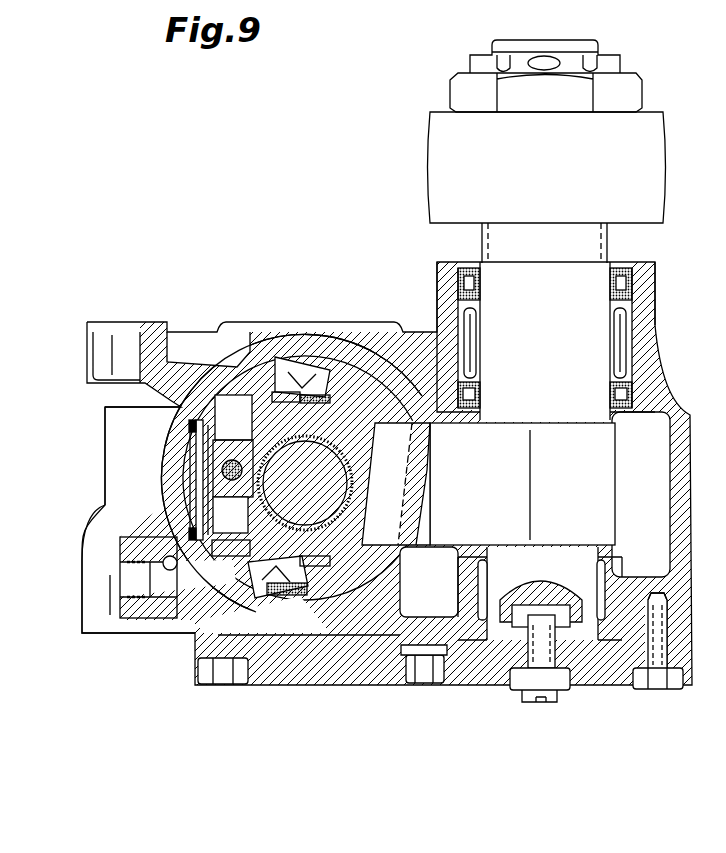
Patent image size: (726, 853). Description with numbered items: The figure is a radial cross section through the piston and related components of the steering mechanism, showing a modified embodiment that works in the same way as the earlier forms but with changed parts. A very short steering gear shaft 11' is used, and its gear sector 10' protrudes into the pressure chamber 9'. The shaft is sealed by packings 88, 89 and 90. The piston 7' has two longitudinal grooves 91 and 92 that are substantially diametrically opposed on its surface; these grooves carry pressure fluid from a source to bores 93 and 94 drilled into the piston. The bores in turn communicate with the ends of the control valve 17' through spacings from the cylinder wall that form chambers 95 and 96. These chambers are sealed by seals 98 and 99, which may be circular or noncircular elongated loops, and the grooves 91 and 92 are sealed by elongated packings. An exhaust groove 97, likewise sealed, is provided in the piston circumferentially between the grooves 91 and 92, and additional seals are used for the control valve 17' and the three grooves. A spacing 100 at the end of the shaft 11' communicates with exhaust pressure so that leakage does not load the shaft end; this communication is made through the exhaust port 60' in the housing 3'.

The housing 3' is at (117, 560).
The piston 7' is at (291, 573).
The pressure chamber 9' is at (401, 617).
The gear sector 10' is at (505, 617).
The steering gear shaft 11' is at (493, 679).
The control valve 17' is at (110, 455).
The exhaust port 60' is at (108, 575).
The packing 88 is at (600, 617).
The packing 89 is at (427, 337).
The packing 90 is at (437, 260).
The longitudinal groove 91 is at (322, 565).
The longitudinal groove 92 is at (320, 345).
The bore 93 is at (285, 590).
The bore 94 is at (280, 360).
The chamber 95 is at (226, 564).
The chamber 96 is at (253, 373).
The exhaust groove 97 is at (190, 465).
The seal 98 is at (257, 585).
The seal 99 is at (290, 355).
The spacing 100 is at (578, 633).